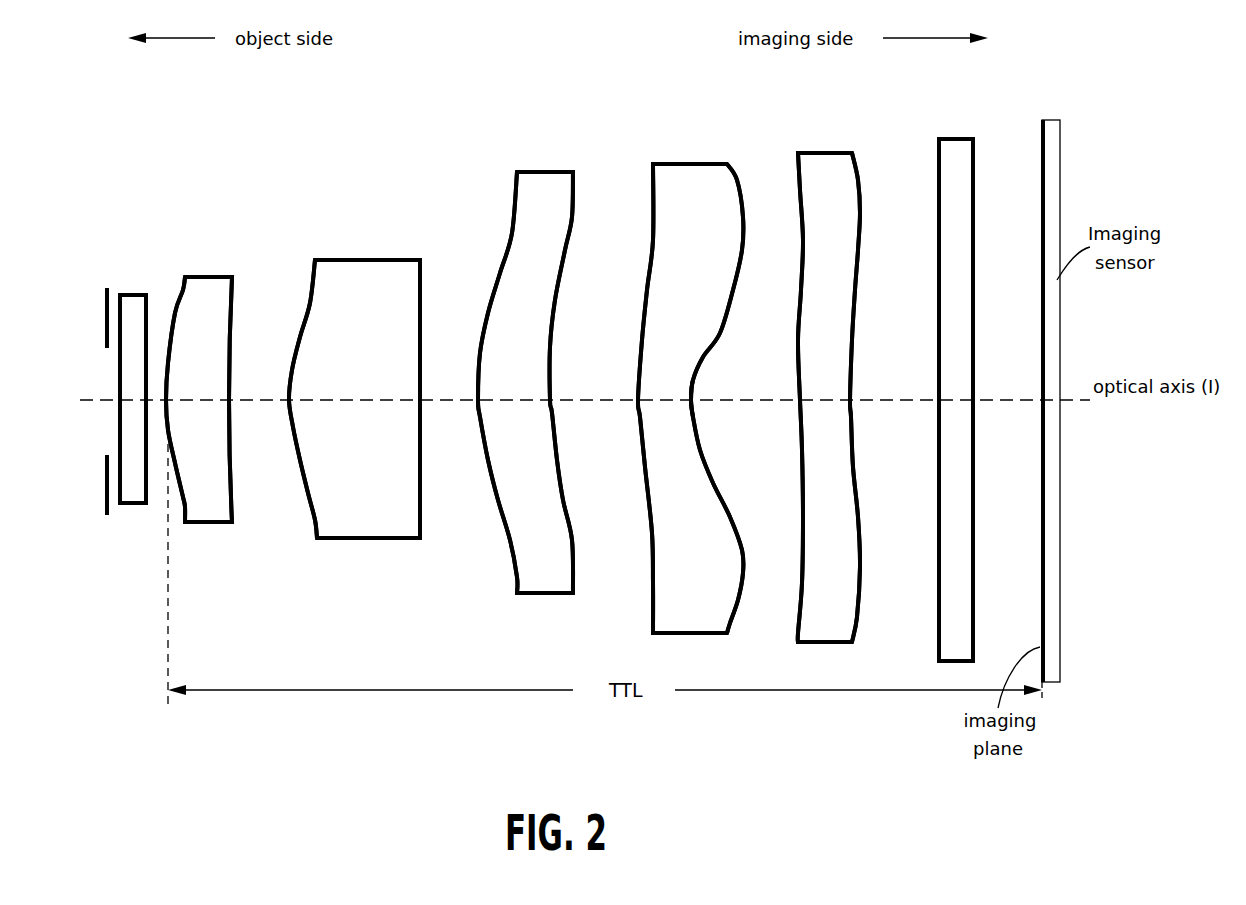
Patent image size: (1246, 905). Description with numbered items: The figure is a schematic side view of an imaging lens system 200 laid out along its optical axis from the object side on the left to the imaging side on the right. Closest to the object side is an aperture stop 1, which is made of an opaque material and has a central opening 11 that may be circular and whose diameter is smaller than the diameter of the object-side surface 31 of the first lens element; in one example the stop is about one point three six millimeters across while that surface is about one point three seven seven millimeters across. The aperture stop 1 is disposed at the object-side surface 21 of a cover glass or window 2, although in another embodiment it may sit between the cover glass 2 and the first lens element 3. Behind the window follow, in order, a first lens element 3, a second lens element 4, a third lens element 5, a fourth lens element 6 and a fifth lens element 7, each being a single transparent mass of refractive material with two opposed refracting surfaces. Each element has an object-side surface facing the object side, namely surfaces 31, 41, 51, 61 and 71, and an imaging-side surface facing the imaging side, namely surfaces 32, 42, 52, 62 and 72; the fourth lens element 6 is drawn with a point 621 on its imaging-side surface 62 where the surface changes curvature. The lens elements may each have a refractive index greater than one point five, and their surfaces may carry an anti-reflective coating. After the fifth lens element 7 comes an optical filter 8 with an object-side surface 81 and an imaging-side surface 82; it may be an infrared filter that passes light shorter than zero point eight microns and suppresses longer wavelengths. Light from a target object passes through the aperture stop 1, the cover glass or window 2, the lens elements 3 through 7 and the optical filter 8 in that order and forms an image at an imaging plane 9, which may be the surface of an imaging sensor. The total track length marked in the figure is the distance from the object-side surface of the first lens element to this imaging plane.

The imaging lens system 200 is at (399, 146).
The aperture stop 1 is at (105, 288).
The central opening 11 is at (105, 382).
The object-side surface of cover glass or window 21 is at (118, 420).
The cover glass or window 2 is at (133, 313).
The first lens element 3 is at (203, 295).
The object-side surface of first lens element 31 is at (183, 508).
The imaging-side surface of first lens element 32 is at (233, 507).
The second lens element 4 is at (342, 278).
The object-side surface of second lens element 41 is at (298, 458).
The imaging-side surface of second lens element 42 is at (422, 482).
The third lens element 5 is at (532, 187).
The object-side surface of third lens element 51 is at (502, 505).
The imaging-side surface of third lens element 52 is at (562, 463).
The fourth lens element 6 is at (688, 178).
The object-side surface of fourth lens element 61 is at (645, 465).
The imaging-side surface of fourth lens element 62 is at (745, 577).
The inflection point on image-side surface of fifth lens element 621 is at (697, 403).
The fifth lens element 7 is at (823, 172).
The object-side surface of fifth lens element 71 is at (800, 495).
The imaging-side surface of fifth lens element 72 is at (863, 567).
The optical filter 8 is at (947, 157).
The object-side surface of optical filter 81 is at (937, 478).
The imaging-side surface of optical filter 82 is at (975, 542).
The imaging plane 9 is at (1043, 120).